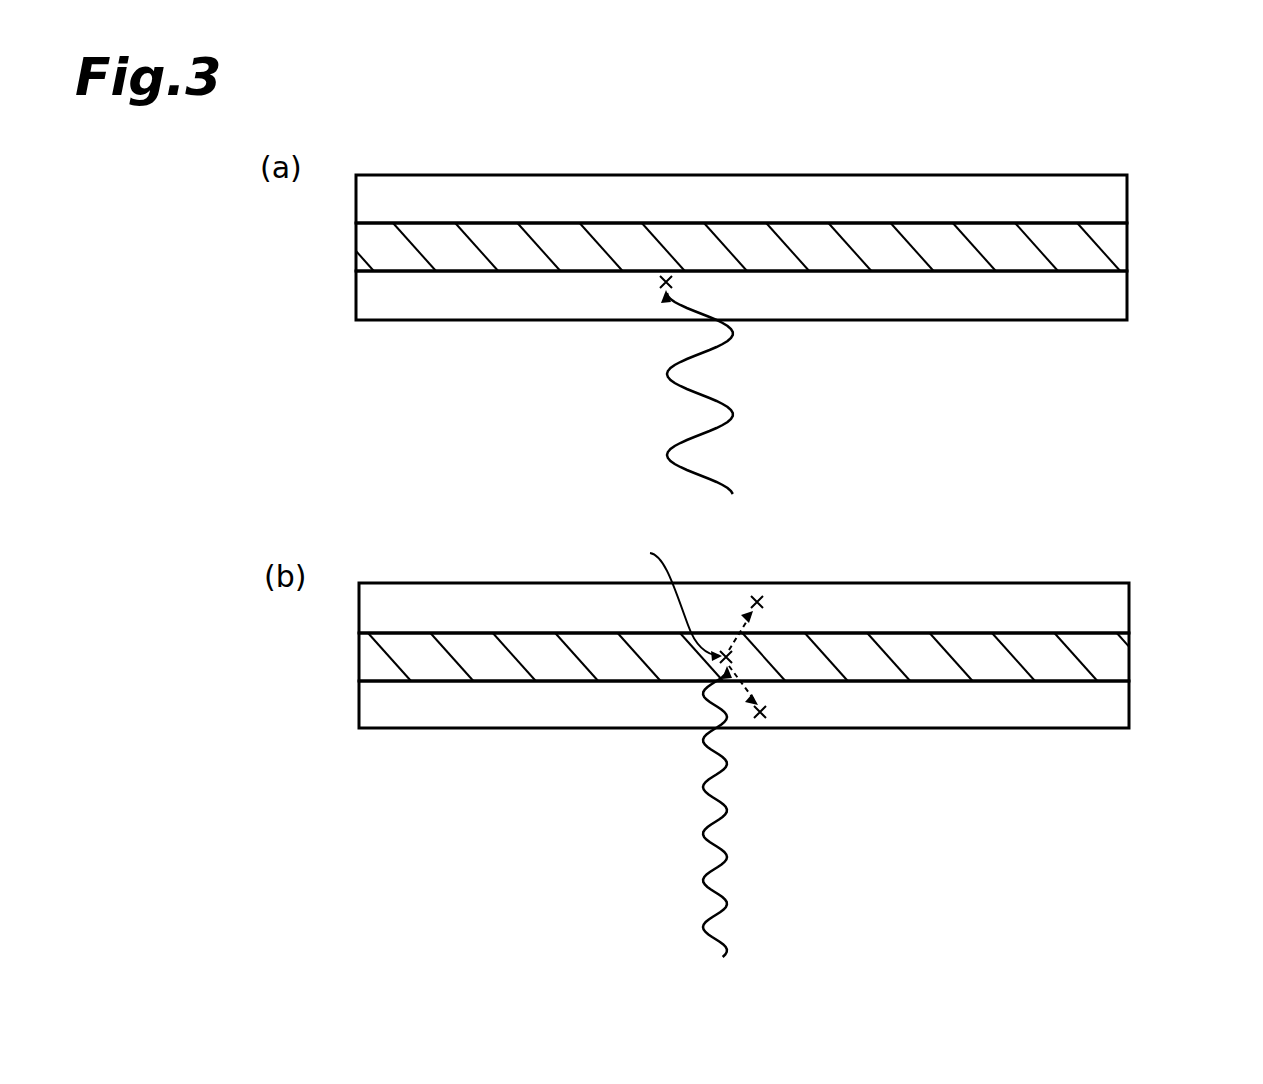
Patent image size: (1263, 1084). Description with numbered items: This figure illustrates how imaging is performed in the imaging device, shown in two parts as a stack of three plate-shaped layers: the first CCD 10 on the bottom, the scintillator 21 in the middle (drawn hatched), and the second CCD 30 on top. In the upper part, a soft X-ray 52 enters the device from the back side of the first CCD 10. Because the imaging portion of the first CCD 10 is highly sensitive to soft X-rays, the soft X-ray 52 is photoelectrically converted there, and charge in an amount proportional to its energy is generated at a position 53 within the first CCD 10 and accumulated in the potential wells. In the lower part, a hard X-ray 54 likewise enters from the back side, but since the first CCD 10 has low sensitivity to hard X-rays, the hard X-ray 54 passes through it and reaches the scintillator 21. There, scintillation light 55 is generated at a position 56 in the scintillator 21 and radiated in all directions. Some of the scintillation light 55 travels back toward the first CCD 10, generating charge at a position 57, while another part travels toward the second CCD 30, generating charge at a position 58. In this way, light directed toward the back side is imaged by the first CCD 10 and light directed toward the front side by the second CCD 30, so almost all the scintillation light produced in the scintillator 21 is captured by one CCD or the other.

The first CCD 10 is at (1120, 302).
The scintillator 21 is at (1120, 258).
The second CCD 30 is at (1120, 199).
The soft X-ray 52 is at (713, 395).
The position 53 is at (667, 276).
The hard X-ray 54 is at (722, 905).
The scintillation light 55 is at (728, 668).
The position 56 is at (667, 598).
The position 57 is at (765, 717).
The position 58 is at (760, 593).